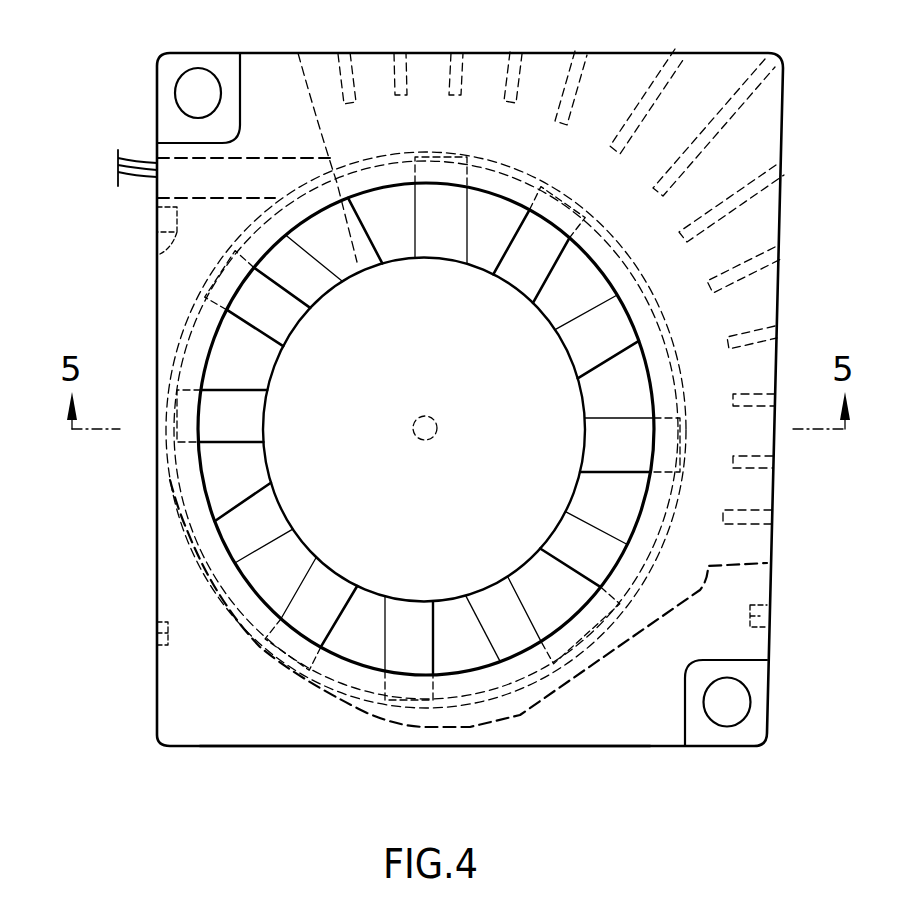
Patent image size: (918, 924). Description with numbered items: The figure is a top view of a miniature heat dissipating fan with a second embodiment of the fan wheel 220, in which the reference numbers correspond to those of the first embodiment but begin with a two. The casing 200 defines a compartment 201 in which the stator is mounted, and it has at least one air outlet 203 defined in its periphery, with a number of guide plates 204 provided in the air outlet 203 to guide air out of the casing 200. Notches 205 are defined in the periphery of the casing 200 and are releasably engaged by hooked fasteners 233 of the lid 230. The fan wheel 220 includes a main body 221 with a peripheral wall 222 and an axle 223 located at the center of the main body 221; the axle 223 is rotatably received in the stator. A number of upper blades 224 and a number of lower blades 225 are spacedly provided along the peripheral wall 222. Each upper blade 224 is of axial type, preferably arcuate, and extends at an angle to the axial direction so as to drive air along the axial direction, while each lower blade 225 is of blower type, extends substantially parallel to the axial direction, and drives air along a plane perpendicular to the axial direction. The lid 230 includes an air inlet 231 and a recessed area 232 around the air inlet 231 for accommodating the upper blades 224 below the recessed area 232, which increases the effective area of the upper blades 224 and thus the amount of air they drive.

The casing 200 is at (705, 737).
The compartment 201 is at (493, 719).
The air outlet 203 is at (615, 58).
The guide plates 204 is at (707, 50).
The notches 205 is at (160, 255).
The hooked fastener 233 is at (138, 248).
The fan wheel 220 is at (677, 164).
The main body 221 is at (538, 322).
The peripheral wall 222 is at (580, 382).
The axle 223 is at (433, 437).
The upper blades 224 is at (643, 443).
The lower blades 225 is at (627, 473).
The lid 230 is at (271, 735).
The air inlet 231 is at (565, 615).
The recessed area 232 is at (655, 556).